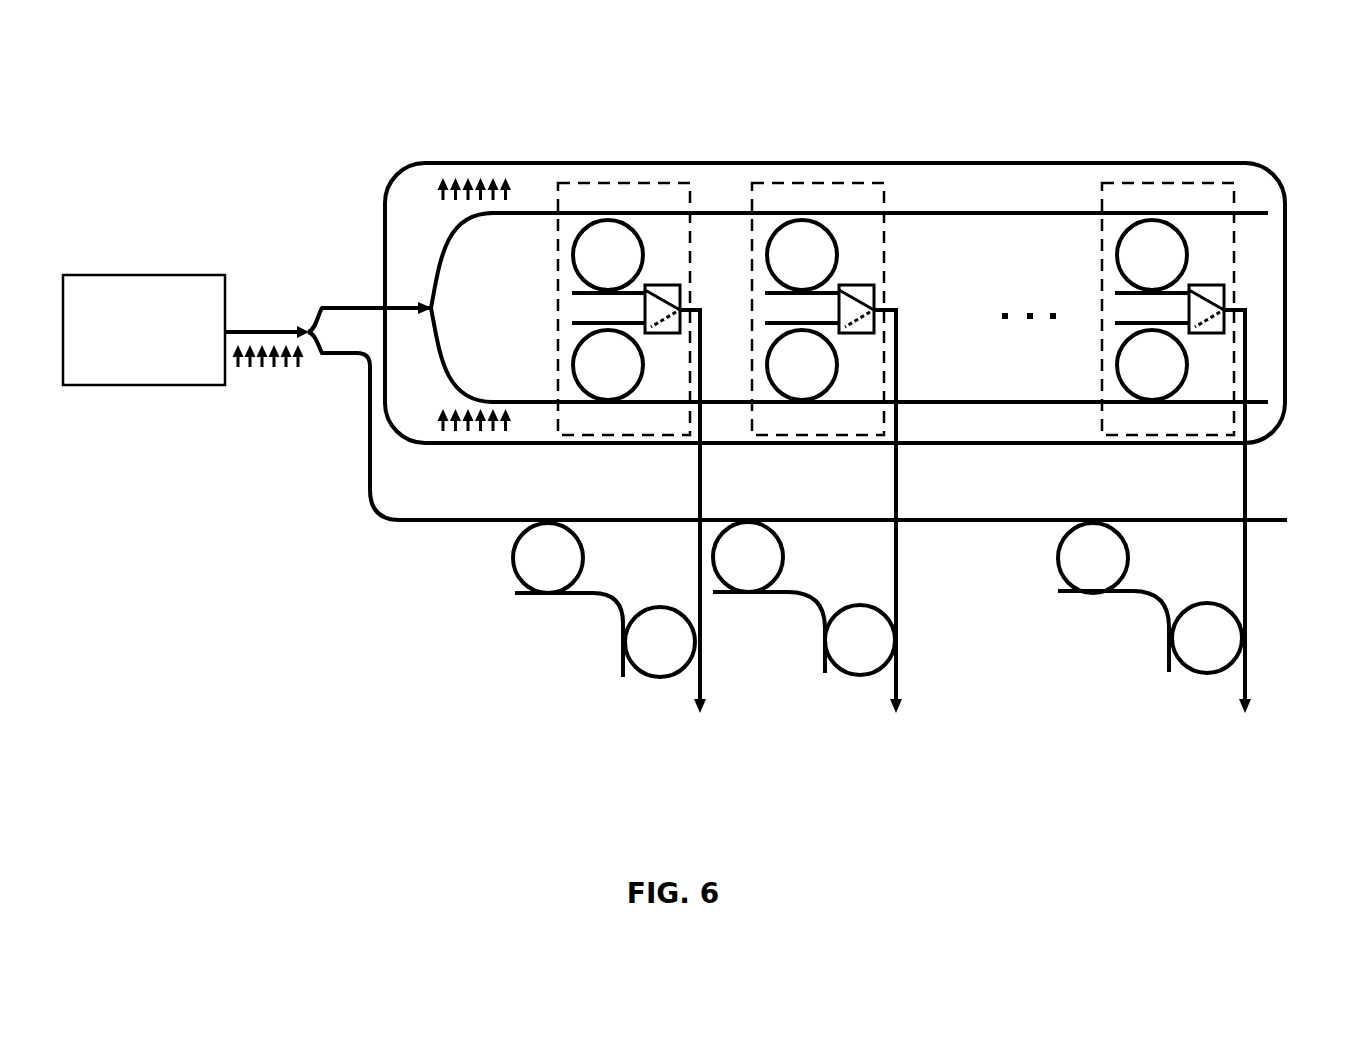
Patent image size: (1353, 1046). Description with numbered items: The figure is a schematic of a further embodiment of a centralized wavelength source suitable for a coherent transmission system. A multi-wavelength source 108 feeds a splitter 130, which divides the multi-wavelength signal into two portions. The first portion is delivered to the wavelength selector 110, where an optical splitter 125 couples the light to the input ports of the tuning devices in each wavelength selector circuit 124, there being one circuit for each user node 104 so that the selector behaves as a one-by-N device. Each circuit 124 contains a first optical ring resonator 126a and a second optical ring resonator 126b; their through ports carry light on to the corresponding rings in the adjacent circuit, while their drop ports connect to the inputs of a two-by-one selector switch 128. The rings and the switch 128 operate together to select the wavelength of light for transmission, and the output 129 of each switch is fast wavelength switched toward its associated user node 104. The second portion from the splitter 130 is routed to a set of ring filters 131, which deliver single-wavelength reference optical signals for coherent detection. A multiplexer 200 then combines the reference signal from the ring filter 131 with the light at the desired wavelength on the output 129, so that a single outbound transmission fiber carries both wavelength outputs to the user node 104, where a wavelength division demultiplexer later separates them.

The multi-wavelength source 108 is at (148, 275).
The splitter 130 is at (307, 328).
The optical splitter 125 is at (434, 306).
The wavelength selector 110 is at (1002, 72).
The wavelength selector circuit 124 is at (637, 182).
The first optical ring resonator 126a is at (606, 236).
The second optical ring resonator 126b is at (607, 381).
The 2×1 selector switch 128 is at (668, 296).
The output 129 is at (703, 386).
The user node 104 is at (971, 726).
The ring filter 131 is at (820, 557).
The multiplexer 200 is at (933, 640).